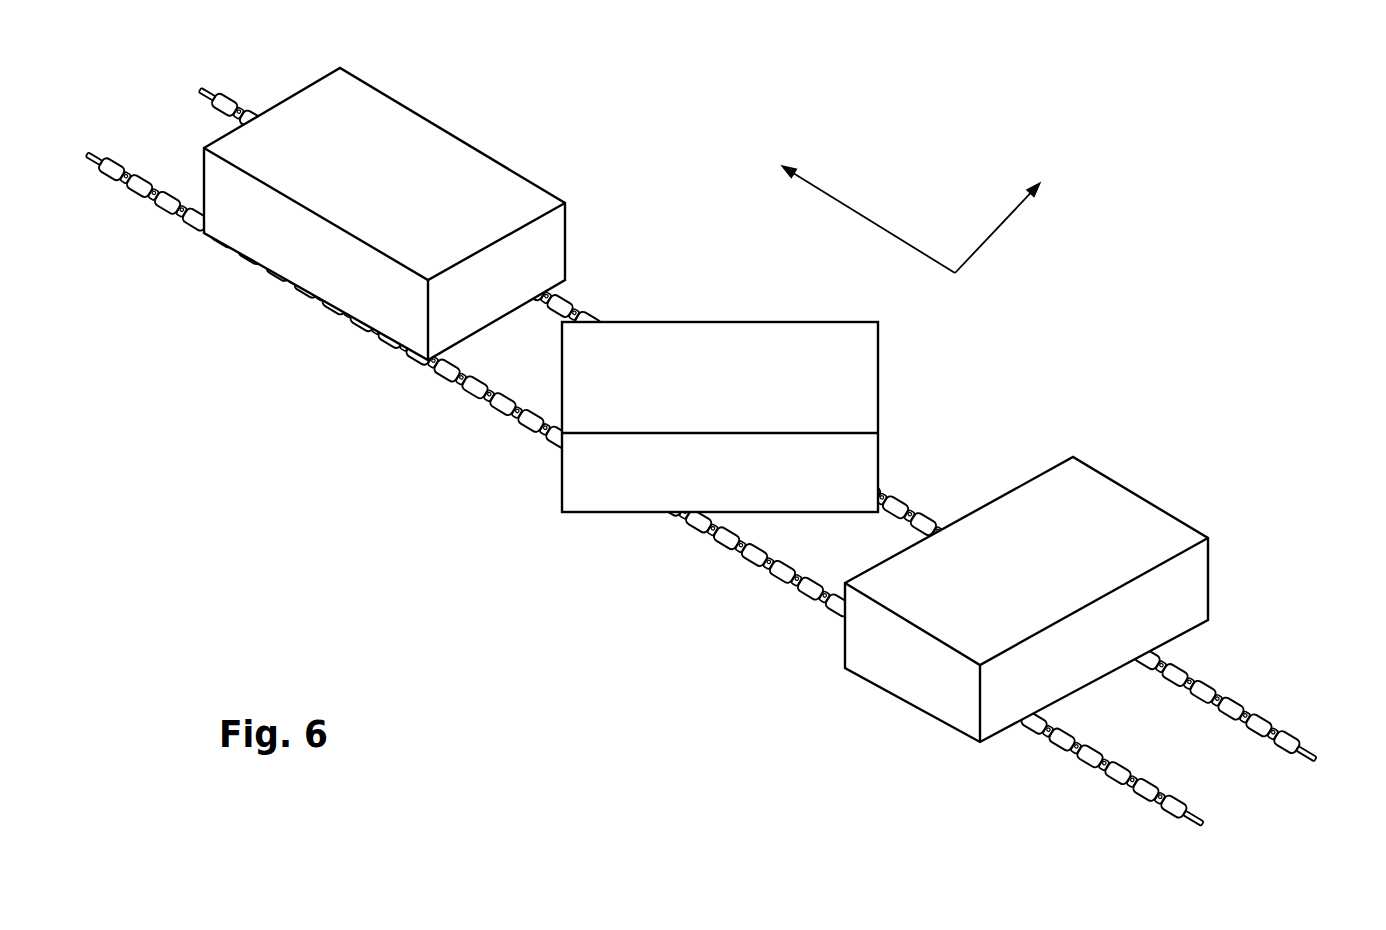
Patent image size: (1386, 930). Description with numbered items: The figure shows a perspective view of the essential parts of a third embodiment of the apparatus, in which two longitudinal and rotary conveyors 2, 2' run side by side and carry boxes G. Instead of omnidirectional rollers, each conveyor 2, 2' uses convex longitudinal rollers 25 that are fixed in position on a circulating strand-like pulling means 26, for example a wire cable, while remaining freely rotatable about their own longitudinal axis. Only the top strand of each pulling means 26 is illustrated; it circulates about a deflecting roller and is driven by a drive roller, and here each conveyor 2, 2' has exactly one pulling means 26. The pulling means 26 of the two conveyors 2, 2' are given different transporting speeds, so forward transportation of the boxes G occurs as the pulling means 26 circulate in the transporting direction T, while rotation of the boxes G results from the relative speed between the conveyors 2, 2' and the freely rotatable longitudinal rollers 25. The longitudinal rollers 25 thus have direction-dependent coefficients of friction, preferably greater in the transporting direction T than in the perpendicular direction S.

The longitudinal and rotary conveyor 2 is at (757, 425).
The longitudinal and rotary conveyor 2' is at (644, 504).
The convex longitudinal roller 25 is at (1108, 763).
The pulling means 26 is at (1173, 813).
The box G is at (374, 195).
The transporting direction T is at (868, 219).
The direction perpendicular to transporting direction S is at (997, 228).